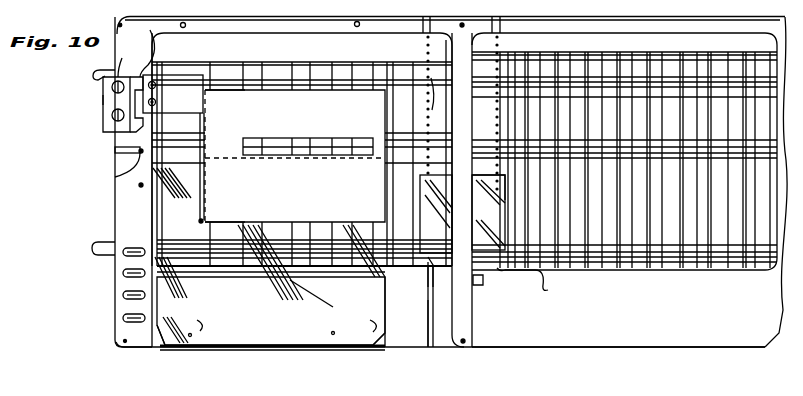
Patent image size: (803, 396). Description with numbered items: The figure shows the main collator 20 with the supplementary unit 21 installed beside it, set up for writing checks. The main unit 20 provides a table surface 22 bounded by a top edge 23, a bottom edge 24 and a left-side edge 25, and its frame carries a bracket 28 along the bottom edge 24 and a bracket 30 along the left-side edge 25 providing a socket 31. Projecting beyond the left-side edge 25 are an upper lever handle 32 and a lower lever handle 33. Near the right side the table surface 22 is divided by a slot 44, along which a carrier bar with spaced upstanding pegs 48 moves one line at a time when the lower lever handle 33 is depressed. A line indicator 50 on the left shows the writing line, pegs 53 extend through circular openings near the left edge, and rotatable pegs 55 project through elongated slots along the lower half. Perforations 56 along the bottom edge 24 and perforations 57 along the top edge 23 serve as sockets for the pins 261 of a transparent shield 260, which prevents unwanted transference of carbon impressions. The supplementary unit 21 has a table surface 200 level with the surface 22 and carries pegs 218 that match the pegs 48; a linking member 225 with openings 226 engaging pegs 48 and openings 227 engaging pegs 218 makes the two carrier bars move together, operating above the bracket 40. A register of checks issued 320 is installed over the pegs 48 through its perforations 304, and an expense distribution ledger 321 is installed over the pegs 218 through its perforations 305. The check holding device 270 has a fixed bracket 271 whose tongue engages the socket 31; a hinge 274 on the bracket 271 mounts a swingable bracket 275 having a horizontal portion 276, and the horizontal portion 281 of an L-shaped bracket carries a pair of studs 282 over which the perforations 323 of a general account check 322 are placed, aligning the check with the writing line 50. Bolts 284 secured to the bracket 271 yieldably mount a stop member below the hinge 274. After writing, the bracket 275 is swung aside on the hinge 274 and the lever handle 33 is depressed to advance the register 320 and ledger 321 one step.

The main collator 20 is at (391, 347).
The supplementary unit 21 is at (591, 349).
The table surface 22 is at (416, 307).
The top edge 23 is at (310, 7).
The bottom edge 24 is at (145, 350).
The left-side edge 25 is at (115, 215).
The bracket 28 is at (316, 352).
The bracket 30 is at (103, 100).
The socket 31 is at (103, 113).
The upper lever handle 32 is at (95, 70).
The lower lever handle 33 is at (105, 258).
The bracket 40 is at (473, 285).
The slot 44 is at (436, 328).
The pegs 48 is at (430, 145).
The line indicator 50 is at (137, 150).
The pegs 53 is at (139, 185).
The pegs 55 is at (130, 318).
The perforations 56 is at (279, 318).
The perforations 57 is at (368, 26).
The table surface 200 is at (661, 328).
The pegs 218 is at (497, 150).
The linking member 225 is at (470, 210).
The openings 226 is at (466, 219).
The openings 227 is at (500, 201).
The transparent shield 260 is at (243, 306).
The pins 261 is at (332, 333).
The check holding device 270 is at (104, 123).
The fixed bracket 271 is at (136, 53).
The hinge 274 is at (122, 27).
The swingable bracket 275 is at (160, 115).
The horizontal portion 276 is at (197, 75).
The horizontal portion 281 is at (210, 170).
The studs 282 is at (210, 204).
The bolts 284 is at (112, 87).
The perforations 304 is at (433, 281).
The perforations 305 is at (535, 282).
The register of checks issued 320 is at (413, 59).
The expense distribution ledger 321 is at (688, 33).
The general account check 322 is at (357, 127).
The perforations 323 is at (210, 190).